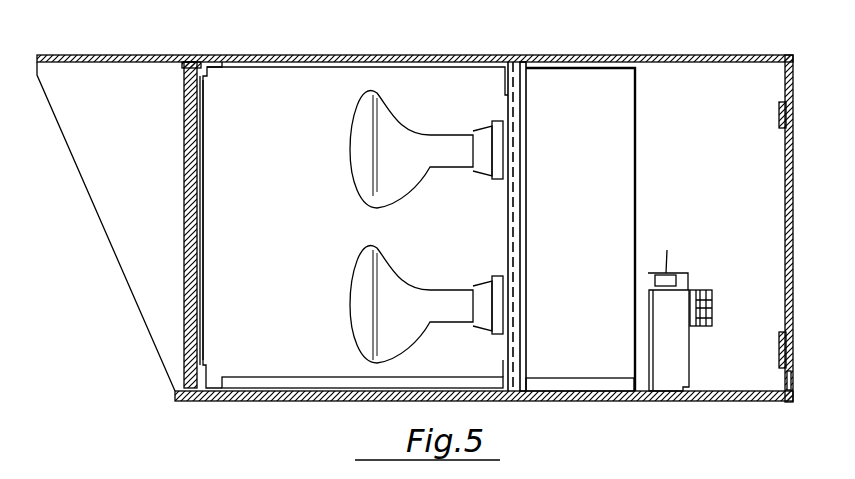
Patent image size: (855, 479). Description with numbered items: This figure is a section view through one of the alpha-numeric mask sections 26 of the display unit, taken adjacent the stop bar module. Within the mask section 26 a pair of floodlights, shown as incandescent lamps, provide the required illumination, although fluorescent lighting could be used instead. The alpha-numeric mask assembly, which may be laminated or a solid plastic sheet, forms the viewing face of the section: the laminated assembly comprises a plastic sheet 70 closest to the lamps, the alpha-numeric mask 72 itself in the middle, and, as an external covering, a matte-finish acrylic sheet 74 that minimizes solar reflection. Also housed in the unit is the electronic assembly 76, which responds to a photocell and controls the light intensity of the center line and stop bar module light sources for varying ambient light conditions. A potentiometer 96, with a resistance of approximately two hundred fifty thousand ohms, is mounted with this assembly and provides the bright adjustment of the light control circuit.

The mask section 26 is at (286, 238).
The plastic sheet 70 is at (200, 125).
The alpha-numeric mask 72 is at (203, 158).
The matte-finish acrylic sheet 74 is at (187, 183).
The electronic assembly 76 is at (683, 354).
The potentiometer 96 is at (667, 250).